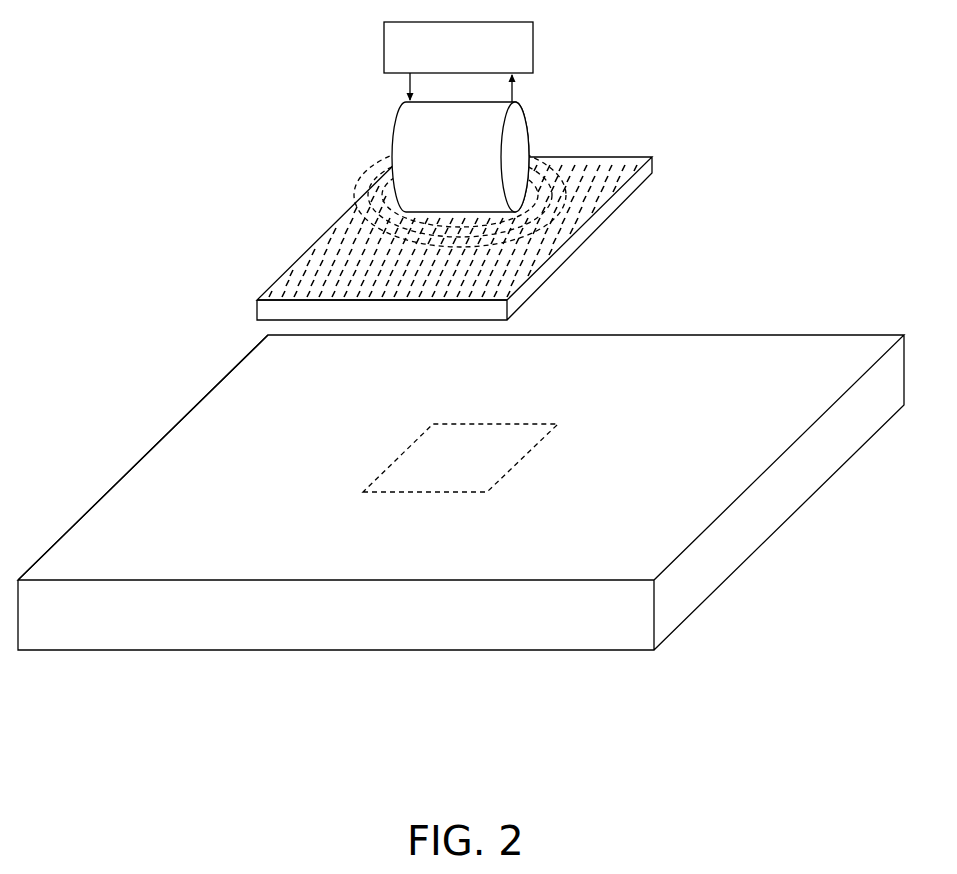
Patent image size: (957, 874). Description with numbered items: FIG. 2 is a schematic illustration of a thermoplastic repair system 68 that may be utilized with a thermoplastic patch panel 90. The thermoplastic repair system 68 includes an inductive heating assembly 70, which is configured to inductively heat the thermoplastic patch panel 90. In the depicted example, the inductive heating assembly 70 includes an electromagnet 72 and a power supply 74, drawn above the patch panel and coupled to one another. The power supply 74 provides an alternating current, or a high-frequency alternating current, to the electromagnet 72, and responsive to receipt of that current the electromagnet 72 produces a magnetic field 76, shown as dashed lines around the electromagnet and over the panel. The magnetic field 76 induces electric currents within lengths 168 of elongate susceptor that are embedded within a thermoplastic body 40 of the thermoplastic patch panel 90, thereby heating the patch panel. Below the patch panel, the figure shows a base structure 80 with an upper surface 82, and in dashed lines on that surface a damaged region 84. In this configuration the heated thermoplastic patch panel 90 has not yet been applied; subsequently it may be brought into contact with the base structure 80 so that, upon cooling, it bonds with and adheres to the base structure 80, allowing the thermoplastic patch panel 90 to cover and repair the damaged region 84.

The thermoplastic repair system 68 is at (192, 123).
The inductive heating assembly 70 is at (404, 106).
The electromagnet 72 is at (392, 142).
The power supply 74 is at (384, 48).
The magnetic field 76 is at (380, 186).
The lengths of elongate susceptor 168 is at (370, 266).
The thermoplastic body 40 is at (421, 238).
The thermoplastic patch panel 90 is at (258, 298).
The base structure 80 is at (158, 441).
The base surface 82 is at (128, 470).
The damaged region 84 is at (400, 480).